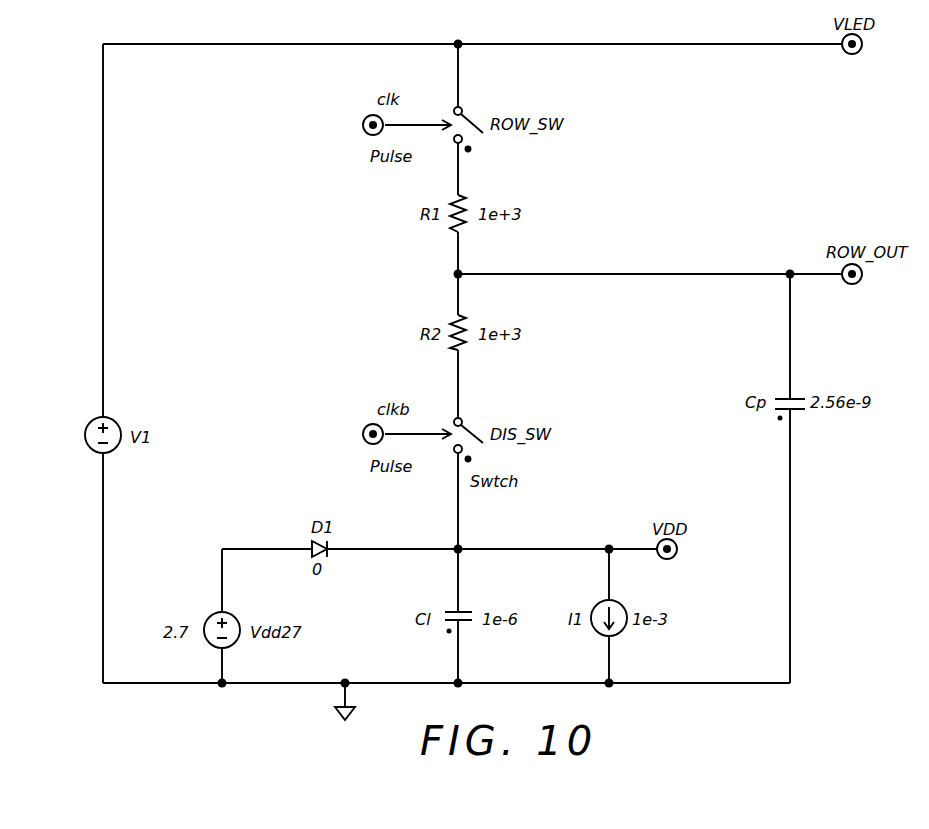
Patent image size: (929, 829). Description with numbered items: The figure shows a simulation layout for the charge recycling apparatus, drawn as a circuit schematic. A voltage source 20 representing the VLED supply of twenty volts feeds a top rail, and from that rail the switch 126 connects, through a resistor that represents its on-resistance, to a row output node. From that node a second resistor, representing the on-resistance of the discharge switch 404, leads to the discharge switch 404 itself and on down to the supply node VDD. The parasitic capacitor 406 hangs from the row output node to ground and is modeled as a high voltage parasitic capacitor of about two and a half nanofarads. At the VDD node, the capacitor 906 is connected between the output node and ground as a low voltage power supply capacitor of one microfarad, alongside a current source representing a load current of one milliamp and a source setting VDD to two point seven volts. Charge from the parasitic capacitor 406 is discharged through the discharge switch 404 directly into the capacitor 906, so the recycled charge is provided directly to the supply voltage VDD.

The switch 126 is at (473, 118).
The discharge switch 404 is at (473, 428).
The capacitor 906 is at (467, 627).
The parasitic capacitor 406 is at (800, 413).
The voltage source V1 20 is at (88, 435).